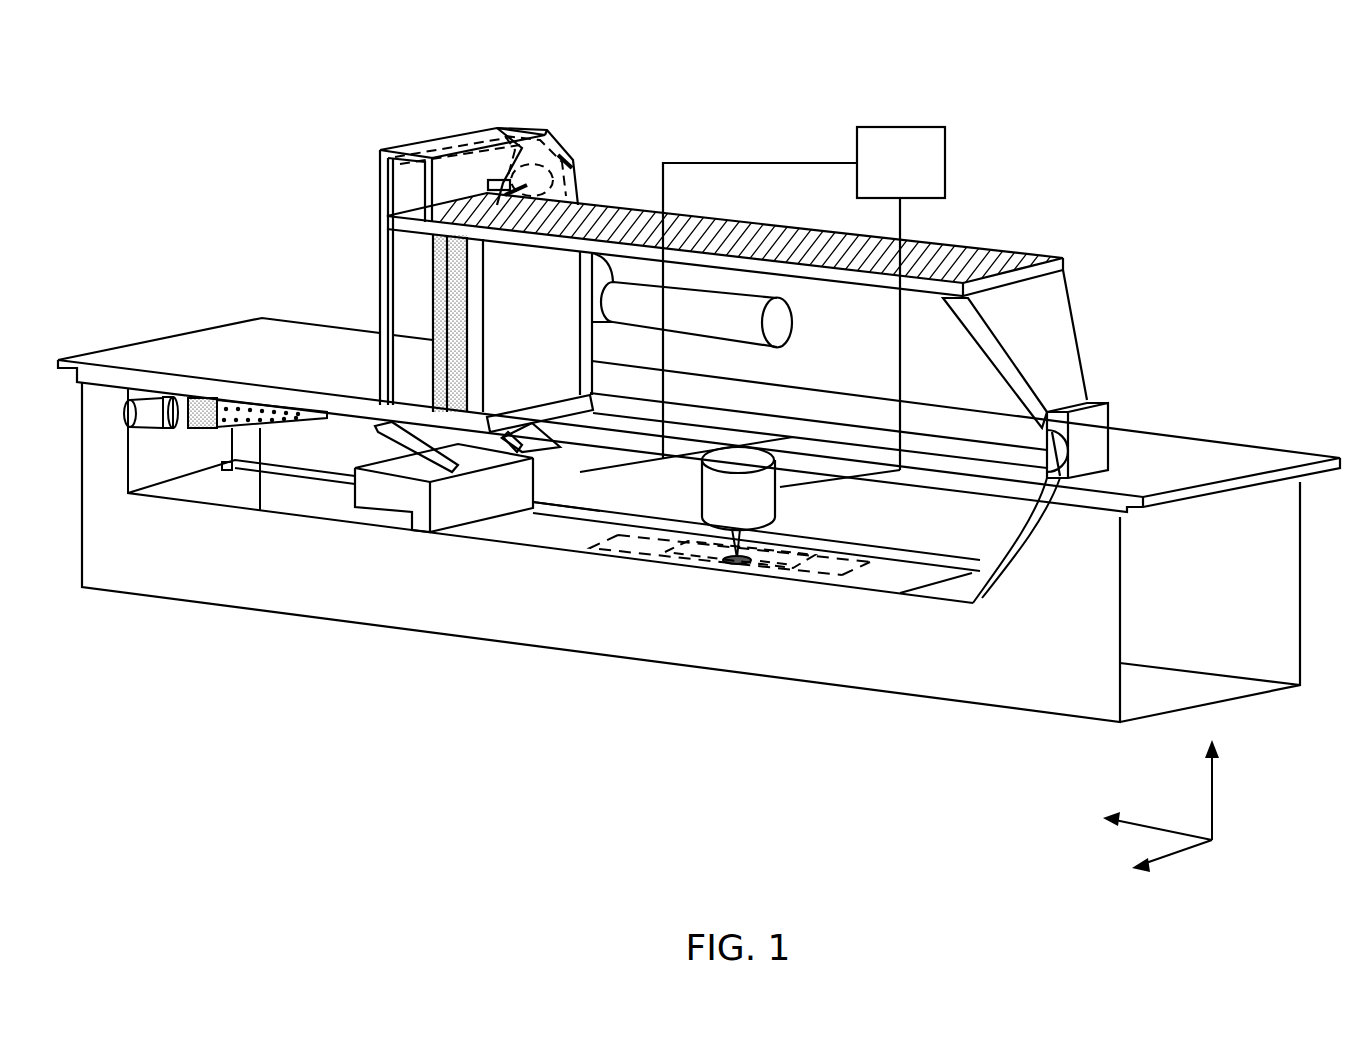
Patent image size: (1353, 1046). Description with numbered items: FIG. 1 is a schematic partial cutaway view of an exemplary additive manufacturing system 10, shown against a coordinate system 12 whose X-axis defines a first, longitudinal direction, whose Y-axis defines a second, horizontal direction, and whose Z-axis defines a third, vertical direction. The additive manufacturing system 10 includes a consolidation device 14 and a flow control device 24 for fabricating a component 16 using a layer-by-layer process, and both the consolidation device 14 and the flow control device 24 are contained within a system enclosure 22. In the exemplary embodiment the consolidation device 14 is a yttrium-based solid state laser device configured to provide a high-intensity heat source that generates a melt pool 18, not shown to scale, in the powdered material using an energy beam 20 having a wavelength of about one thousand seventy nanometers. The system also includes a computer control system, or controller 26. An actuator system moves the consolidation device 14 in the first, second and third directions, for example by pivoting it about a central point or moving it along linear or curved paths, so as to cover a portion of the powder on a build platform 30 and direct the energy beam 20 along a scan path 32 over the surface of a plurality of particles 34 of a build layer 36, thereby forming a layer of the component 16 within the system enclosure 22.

The additive manufacturing system 10 is at (392, 92).
The coordinate system 12 is at (1078, 855).
The consolidation device 14 is at (715, 493).
The component 16 is at (860, 575).
The melt pool 18 is at (728, 565).
The energy beam 20 is at (678, 558).
The system enclosure 22 is at (127, 575).
The flow control device 24 is at (176, 640).
The controller 26 is at (886, 173).
The build platform 30 is at (550, 533).
The scan path 32 is at (652, 548).
The particles 34 is at (760, 562).
The build layer 36 is at (803, 562).